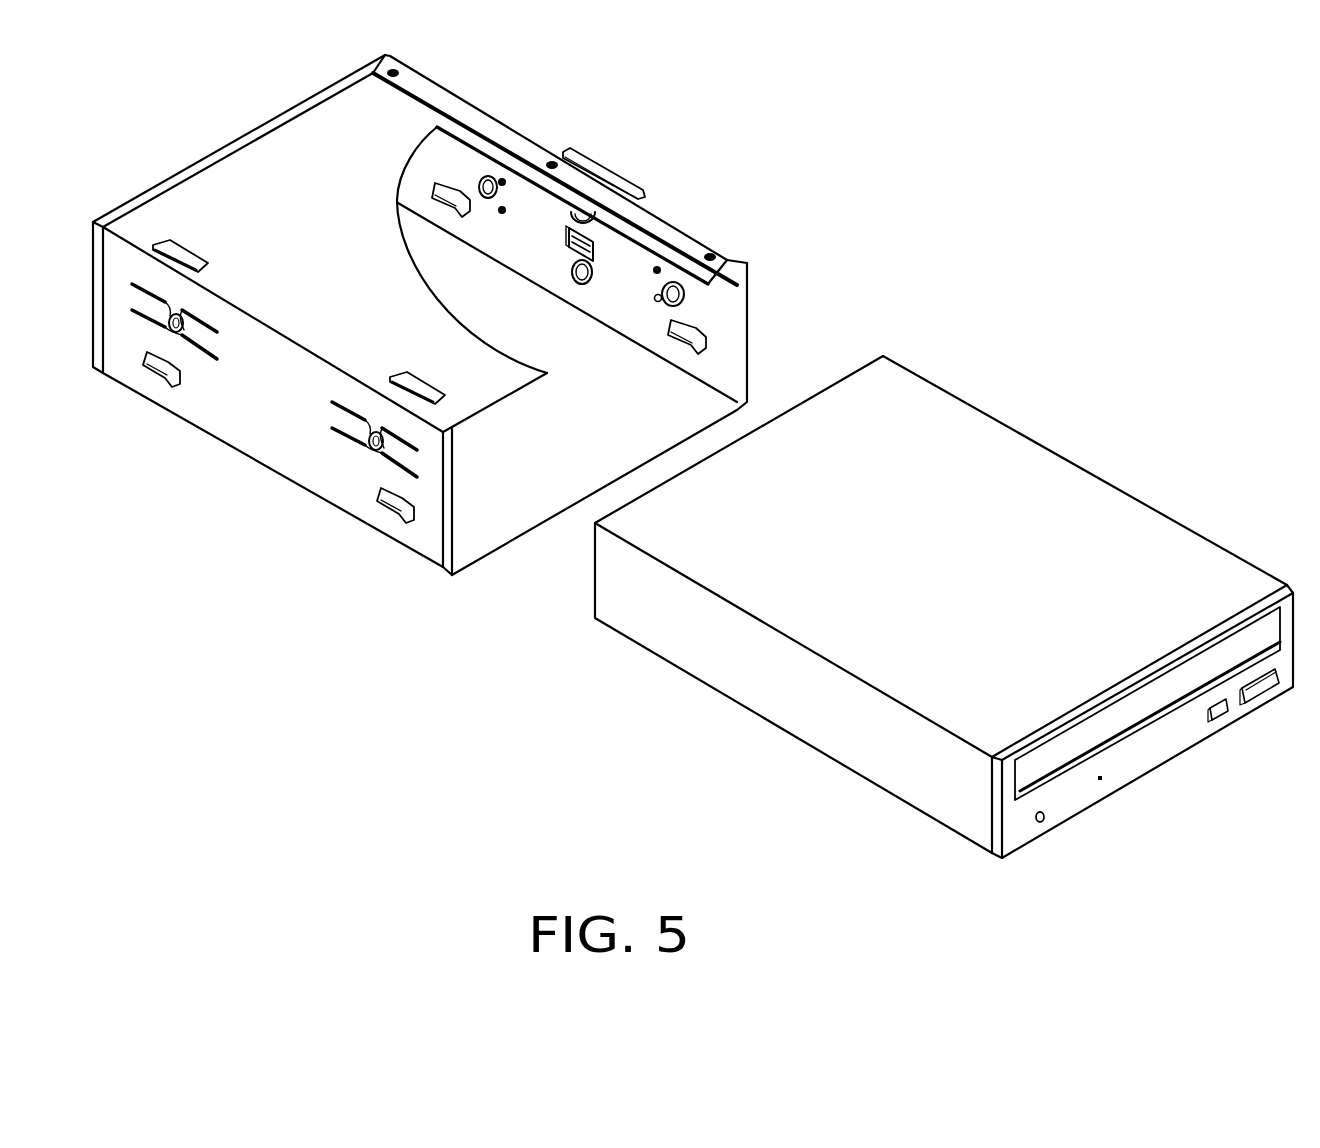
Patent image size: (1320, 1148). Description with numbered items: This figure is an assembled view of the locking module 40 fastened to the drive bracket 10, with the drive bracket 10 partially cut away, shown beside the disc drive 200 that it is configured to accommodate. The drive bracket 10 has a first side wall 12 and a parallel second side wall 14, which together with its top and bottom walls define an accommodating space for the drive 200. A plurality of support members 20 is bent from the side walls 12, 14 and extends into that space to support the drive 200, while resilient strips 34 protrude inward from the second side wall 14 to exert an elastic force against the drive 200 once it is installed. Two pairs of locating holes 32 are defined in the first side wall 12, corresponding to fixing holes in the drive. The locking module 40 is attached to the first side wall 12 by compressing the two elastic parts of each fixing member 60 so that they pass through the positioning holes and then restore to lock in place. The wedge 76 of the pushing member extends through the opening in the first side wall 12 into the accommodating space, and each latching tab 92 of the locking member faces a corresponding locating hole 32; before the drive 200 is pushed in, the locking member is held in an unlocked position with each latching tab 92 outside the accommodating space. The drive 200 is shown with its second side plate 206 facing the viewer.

The drive bracket 10 is at (237, 167).
The first side wall 12 is at (733, 299).
The second side wall 14 is at (258, 427).
The support members 20 is at (703, 340).
The locating holes 32 is at (657, 302).
The resilient strips 34 is at (370, 450).
The locking module 40 is at (625, 173).
The fixing member 60 is at (593, 270).
The wedge 76 is at (572, 200).
The latching tabs 92 is at (672, 305).
The disc drive 200 is at (1092, 452).
The second side plate 206 is at (887, 757).